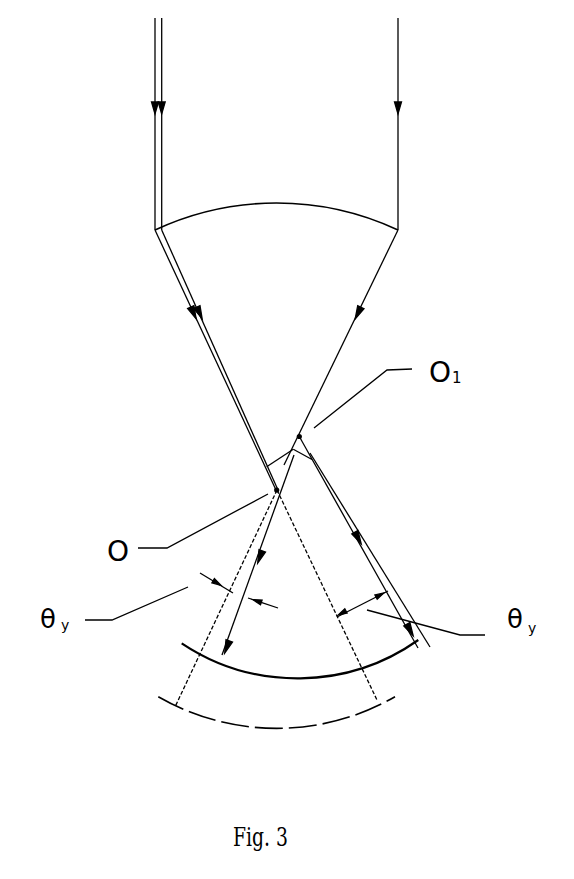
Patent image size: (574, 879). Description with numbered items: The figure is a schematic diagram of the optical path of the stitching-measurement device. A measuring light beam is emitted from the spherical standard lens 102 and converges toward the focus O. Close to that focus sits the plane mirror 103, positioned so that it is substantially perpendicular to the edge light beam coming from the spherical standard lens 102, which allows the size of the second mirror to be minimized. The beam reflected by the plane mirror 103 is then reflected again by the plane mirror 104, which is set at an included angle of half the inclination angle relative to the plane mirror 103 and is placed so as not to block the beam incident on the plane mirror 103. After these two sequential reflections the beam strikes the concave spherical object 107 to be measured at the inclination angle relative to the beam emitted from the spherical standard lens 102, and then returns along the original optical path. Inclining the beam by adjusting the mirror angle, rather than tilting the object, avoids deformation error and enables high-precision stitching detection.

The spherical standard lens 102 is at (212, 189).
The plane mirror 103 is at (160, 420).
The plane mirror 104 is at (390, 548).
The concave spherical object to be measured 107 is at (222, 670).